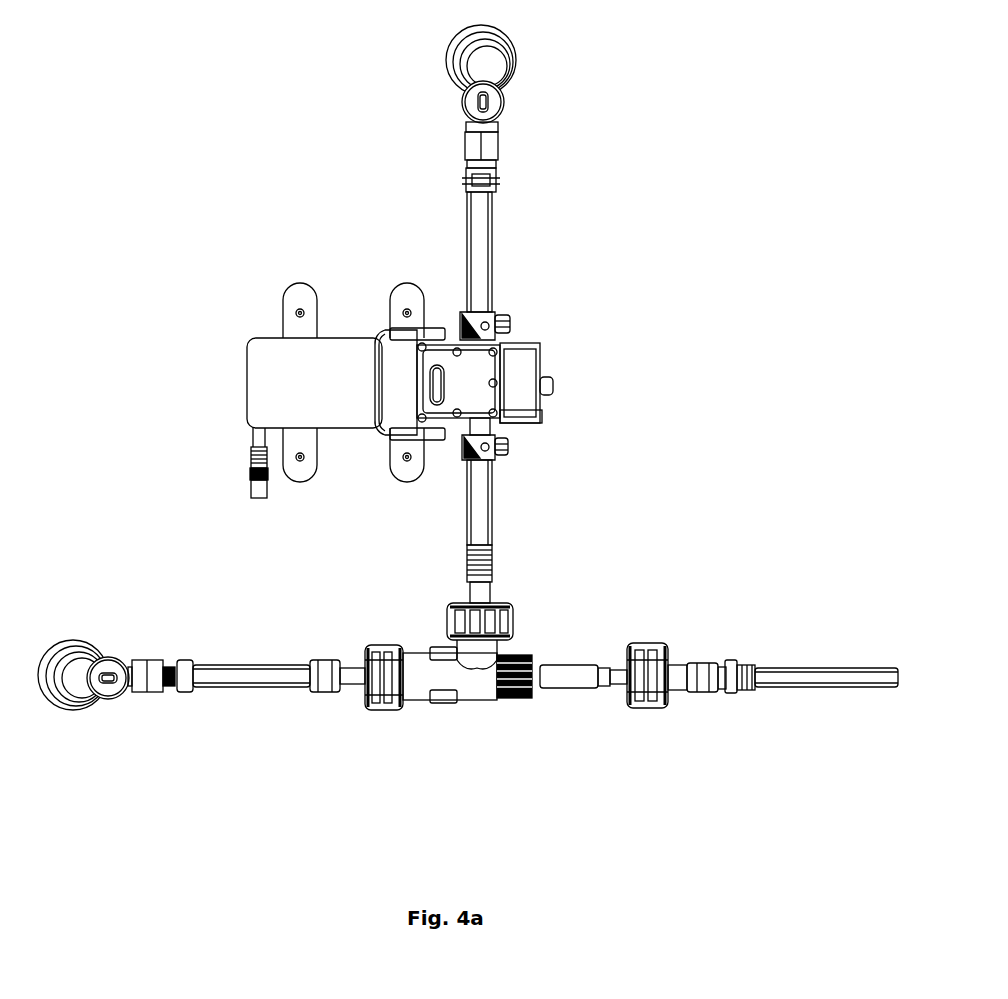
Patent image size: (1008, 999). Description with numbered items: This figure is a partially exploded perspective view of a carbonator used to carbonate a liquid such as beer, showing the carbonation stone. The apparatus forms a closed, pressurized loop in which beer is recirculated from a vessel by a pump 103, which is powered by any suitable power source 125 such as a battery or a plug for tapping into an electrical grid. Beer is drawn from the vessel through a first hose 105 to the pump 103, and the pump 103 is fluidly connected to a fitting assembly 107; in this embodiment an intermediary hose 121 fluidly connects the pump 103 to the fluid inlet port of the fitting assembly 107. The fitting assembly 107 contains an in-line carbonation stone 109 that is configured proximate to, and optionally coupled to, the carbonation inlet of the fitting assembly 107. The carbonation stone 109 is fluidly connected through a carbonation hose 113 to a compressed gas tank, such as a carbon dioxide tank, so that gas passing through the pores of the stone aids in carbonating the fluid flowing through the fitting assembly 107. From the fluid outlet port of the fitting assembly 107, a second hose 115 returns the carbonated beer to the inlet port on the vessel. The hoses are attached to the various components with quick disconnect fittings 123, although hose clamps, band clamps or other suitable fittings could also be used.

The pump 103 is at (346, 352).
The first hose 105 is at (497, 245).
The fitting assembly 107 is at (443, 668).
The carbonation stone 109 is at (575, 665).
The carbonation hose 113 is at (778, 668).
The second hose 115 is at (240, 660).
The intermediary hose 121 is at (495, 505).
The quick disconnect fittings 123 is at (505, 65).
The power source 125 is at (248, 470).